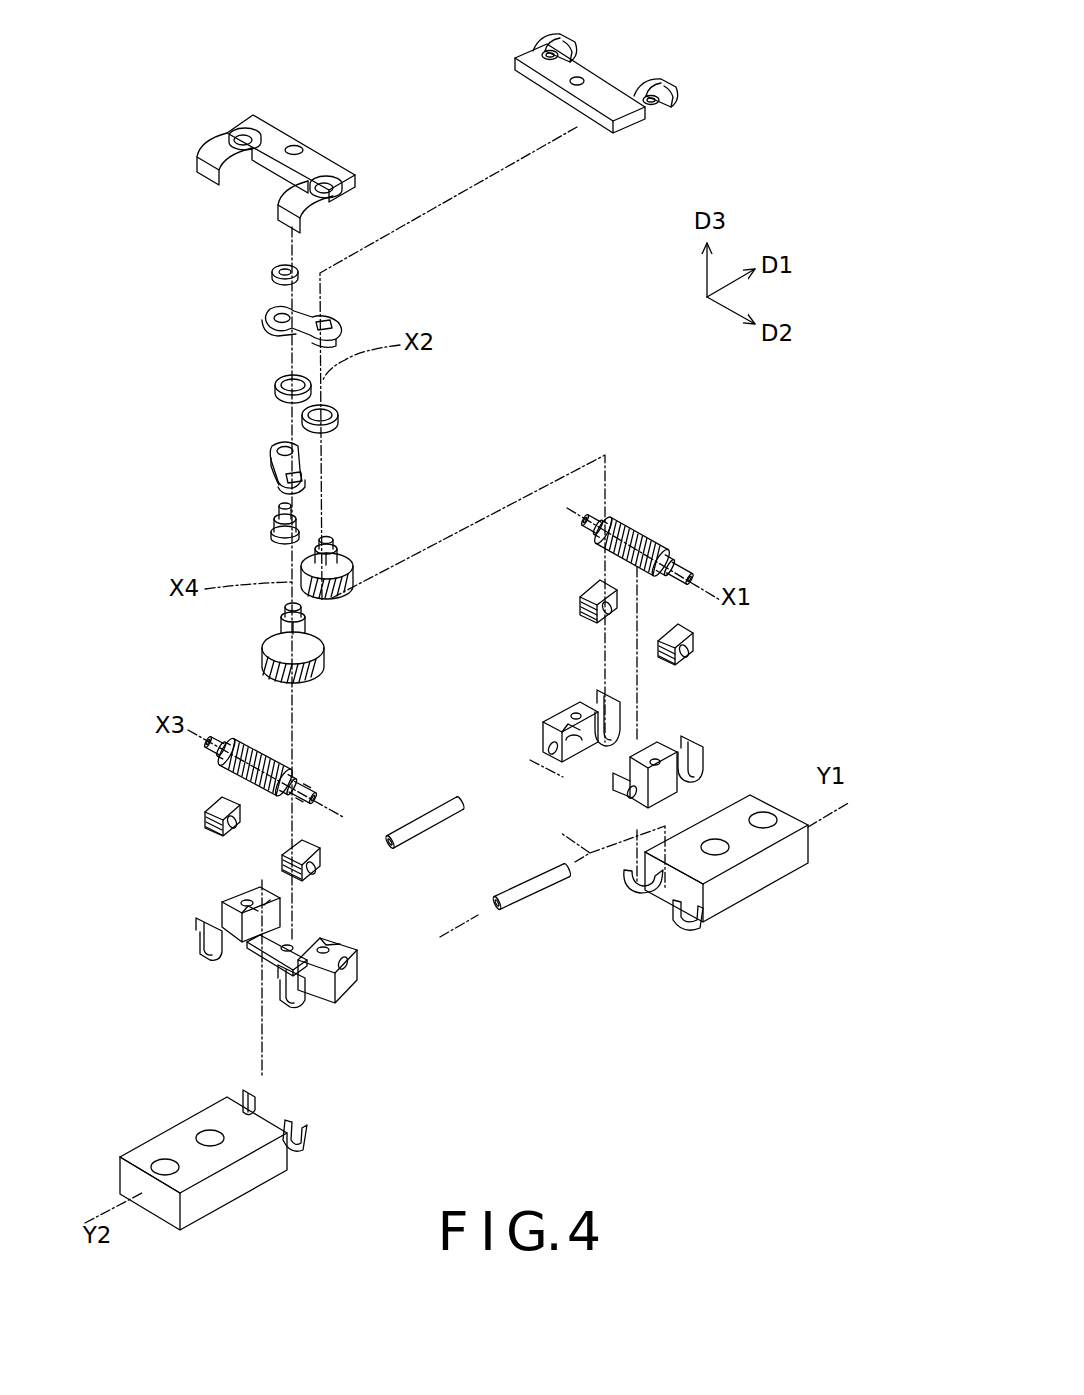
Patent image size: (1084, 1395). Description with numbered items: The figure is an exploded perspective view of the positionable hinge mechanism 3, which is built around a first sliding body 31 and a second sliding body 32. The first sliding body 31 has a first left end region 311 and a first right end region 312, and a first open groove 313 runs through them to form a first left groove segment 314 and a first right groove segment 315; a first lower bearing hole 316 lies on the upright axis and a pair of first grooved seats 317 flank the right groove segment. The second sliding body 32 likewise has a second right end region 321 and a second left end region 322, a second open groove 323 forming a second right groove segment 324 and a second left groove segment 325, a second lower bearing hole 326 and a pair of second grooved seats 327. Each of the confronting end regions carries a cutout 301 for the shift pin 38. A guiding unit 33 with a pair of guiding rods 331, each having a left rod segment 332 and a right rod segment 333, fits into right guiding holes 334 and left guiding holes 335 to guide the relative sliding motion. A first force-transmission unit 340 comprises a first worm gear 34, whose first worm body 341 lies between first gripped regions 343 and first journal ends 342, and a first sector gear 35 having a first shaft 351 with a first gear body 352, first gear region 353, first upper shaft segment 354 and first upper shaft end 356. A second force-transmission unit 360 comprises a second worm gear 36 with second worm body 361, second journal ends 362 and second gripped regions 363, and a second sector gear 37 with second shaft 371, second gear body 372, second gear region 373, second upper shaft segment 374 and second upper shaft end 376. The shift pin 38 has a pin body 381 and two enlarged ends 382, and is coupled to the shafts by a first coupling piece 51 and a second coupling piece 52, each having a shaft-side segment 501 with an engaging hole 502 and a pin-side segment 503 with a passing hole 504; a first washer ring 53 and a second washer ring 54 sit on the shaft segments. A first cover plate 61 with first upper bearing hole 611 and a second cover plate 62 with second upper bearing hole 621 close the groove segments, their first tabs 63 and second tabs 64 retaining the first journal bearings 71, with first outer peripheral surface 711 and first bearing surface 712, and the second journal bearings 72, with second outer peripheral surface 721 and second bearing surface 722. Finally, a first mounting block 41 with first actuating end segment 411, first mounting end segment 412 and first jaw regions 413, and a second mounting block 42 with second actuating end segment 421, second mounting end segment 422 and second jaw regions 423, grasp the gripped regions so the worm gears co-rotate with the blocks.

The positionable hinge mechanism 3 is at (780, 57).
The first sliding body 31 is at (509, 797).
The cutout 301 is at (572, 733).
The first left end region 311 is at (528, 745).
The first right end region 312 is at (708, 737).
The first open groove 313 is at (535, 830).
The first left groove segment 314 is at (578, 768).
The first right groove segment 315 is at (618, 754).
The first lower bearing hole 316 is at (618, 758).
The first grooved seats 317 is at (602, 698).
The second sliding body 32 is at (290, 982).
The second right end region 321 is at (367, 972).
The second left end region 322 is at (314, 1018).
The second open groove 323 is at (130, 1010).
The second right groove segment 324 is at (258, 950).
The second left groove segment 325 is at (256, 970).
The second lower bearing hole 326 is at (291, 946).
The second grooved seats 327 is at (200, 938).
The guiding unit 33 is at (464, 846).
The guiding rods 331 is at (404, 811).
The left rod segment 332 is at (402, 841).
The right rod segment 333 is at (455, 803).
The right guiding holes 334 is at (549, 744).
The left guiding holes 335 is at (210, 912).
The first worm gear 34 is at (659, 477).
The first force-transmission unit 340 is at (714, 498).
The first worm body 341 is at (645, 540).
The first journal ends 342 is at (583, 525).
The first gripped regions 343 is at (608, 528).
The first sector gear 35 is at (377, 519).
The first shaft 351 is at (329, 526).
The first gear body 352 is at (341, 566).
The first gear region 353 is at (353, 584).
The first upper shaft segment 354 is at (335, 556).
The first upper shaft end 356 is at (328, 546).
The second worm gear 36 is at (221, 745).
The second force-transmission unit 360 is at (179, 631).
The second worm body 361 is at (257, 750).
The second journal ends 362 is at (208, 744).
The second gripped regions 363 is at (222, 742).
The second sector gear 37 is at (306, 643).
The second shaft 371 is at (318, 627).
The second gear body 372 is at (274, 664).
The second gear region 373 is at (288, 662).
The second upper shaft segment 374 is at (284, 630).
The second upper shaft end 376 is at (287, 610).
The shift pin 38 is at (232, 529).
The pin body 381 is at (273, 533).
The enlarged ends 382 is at (278, 266).
The first mounting block 41 is at (708, 864).
The first actuating end segment 411 is at (650, 918).
The first mounting end segment 412 is at (789, 819).
The first jaw regions 413 is at (625, 872).
The second mounting block 42 is at (249, 1146).
The second actuating end segment 421 is at (314, 1137).
The second mounting end segment 422 is at (132, 1185).
The second jaw regions 423 is at (247, 1090).
The first coupling piece 51 is at (287, 388).
The shaft-side segment 501 is at (340, 331).
The engaging hole 502 is at (324, 318).
The pin-side segment 503 is at (278, 335).
The passing hole 504 is at (281, 315).
The second coupling piece 52 is at (246, 452).
The first washer ring 53 is at (327, 404).
The second washer ring 54 is at (277, 382).
The first cover plate 61 is at (611, 85).
The first upper bearing hole 611 is at (575, 83).
The second cover plate 62 is at (253, 157).
The second upper bearing hole 621 is at (296, 146).
The first tabs 63 is at (575, 45).
The second tabs 64 is at (212, 157).
The first journal bearings 71 is at (634, 638).
The first outer peripheral surface 711 is at (592, 604).
The first bearing surface 712 is at (606, 612).
The second journal bearings 72 is at (240, 858).
The second outer peripheral surface 721 is at (214, 823).
The second bearing surface 722 is at (317, 872).